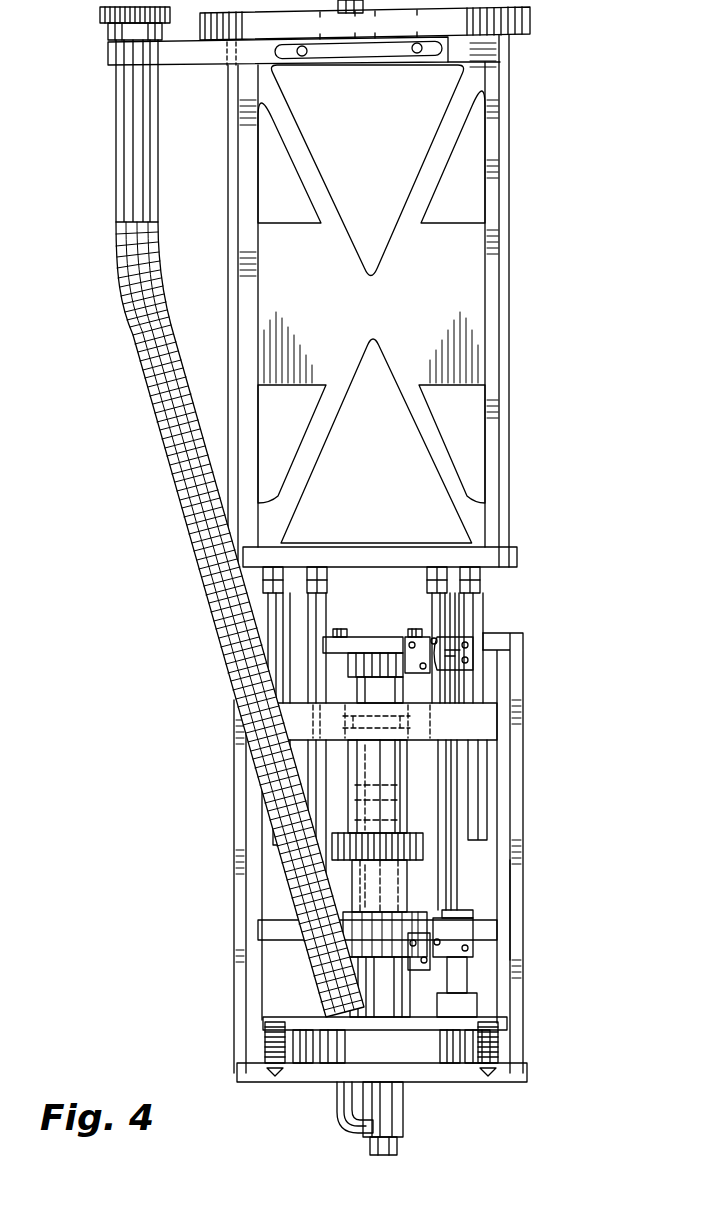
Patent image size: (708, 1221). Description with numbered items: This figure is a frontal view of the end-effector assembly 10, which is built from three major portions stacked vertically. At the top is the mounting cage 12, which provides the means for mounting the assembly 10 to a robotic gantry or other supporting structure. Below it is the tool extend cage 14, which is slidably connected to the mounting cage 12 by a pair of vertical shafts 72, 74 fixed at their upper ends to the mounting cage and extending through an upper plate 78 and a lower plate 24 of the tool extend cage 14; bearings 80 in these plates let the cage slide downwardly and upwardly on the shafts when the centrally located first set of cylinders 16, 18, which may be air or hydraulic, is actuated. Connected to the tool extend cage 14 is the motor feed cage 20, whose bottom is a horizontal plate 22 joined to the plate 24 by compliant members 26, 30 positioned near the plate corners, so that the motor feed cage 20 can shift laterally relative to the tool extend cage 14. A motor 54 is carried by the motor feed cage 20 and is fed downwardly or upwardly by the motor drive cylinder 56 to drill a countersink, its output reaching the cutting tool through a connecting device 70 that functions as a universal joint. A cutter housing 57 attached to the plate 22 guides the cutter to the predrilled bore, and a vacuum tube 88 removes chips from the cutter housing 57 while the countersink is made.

The end-effector assembly 10 is at (595, 175).
The mounting cage 12 is at (522, 328).
The tool extend cage 14 is at (505, 795).
The cylinder 16 is at (485, 620).
The cylinder 18 is at (283, 672).
The motor feed cage 20 is at (525, 907).
The horizontal plate 22 is at (440, 1082).
The lower plate 24 is at (303, 1017).
The compliant member 26 is at (492, 1048).
The compliant member 30 is at (285, 1049).
The motor 54 is at (355, 873).
The motor drive cylinder 56 is at (378, 687).
The cutter housing 57 is at (399, 1120).
The connecting device 70 is at (397, 988).
The vertical shaft 72 is at (462, 608).
The vertical shaft 74 is at (275, 628).
The upper plate 78 is at (497, 697).
The bearings 80 is at (293, 707).
The vacuum tube 88 is at (162, 376).